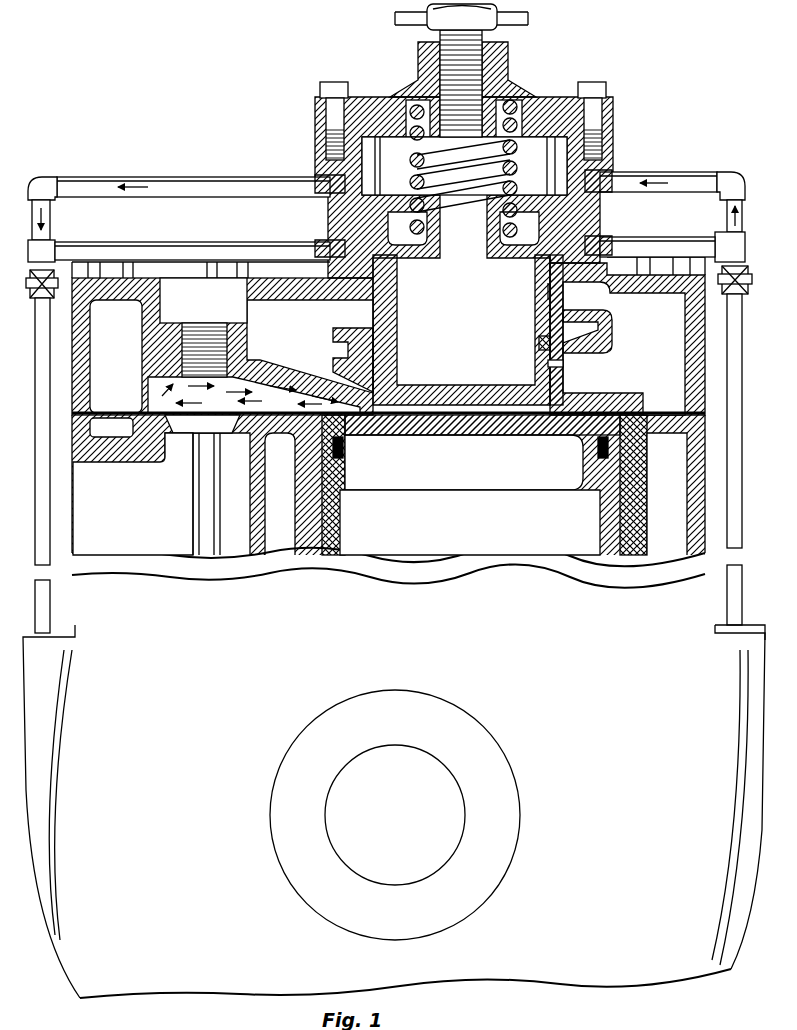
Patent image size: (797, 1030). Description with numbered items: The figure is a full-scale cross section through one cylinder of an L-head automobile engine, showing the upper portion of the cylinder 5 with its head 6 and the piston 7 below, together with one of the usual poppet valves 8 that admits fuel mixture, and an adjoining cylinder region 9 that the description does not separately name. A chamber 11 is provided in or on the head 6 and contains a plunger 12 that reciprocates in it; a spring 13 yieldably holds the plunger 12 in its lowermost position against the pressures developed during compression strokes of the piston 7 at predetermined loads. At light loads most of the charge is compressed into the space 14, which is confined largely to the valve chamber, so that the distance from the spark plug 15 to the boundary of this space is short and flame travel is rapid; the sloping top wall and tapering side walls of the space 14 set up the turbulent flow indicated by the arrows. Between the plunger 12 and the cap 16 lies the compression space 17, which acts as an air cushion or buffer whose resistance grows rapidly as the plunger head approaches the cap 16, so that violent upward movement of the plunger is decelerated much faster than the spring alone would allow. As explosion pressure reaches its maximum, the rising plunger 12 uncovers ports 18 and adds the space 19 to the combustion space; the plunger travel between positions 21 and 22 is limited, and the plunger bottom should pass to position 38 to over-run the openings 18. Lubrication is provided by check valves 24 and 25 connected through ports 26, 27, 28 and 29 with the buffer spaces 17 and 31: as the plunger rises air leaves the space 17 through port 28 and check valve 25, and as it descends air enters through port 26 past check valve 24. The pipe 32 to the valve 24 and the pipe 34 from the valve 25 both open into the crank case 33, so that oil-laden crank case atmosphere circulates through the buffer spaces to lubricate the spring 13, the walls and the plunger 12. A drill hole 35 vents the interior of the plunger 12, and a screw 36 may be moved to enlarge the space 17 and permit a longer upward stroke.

The cylinder 5 is at (305, 554).
The head 6 is at (78, 373).
The piston 7 is at (342, 529).
The poppet valve 8 is at (200, 497).
The chamber 9 is at (83, 500).
The chamber 11 is at (320, 150).
The plunger 12 is at (393, 283).
The spring 13 is at (527, 105).
The space 14 is at (205, 408).
The spark plug 15 is at (203, 327).
The cap 16 is at (346, 97).
The compression space 17 is at (450, 168).
The ports 18 is at (383, 363).
The space 19 is at (586, 334).
The position 21 is at (508, 410).
The position 22 is at (548, 365).
The check valve 24 is at (745, 278).
The check valve 25 is at (34, 278).
The port 26 is at (604, 174).
The port 27 is at (598, 240).
The port 28 is at (318, 181).
The port 29 is at (330, 248).
The buffer space 31 is at (546, 270).
The pipe 32 is at (737, 343).
The crank case 33 is at (753, 630).
The pipe 34 is at (43, 452).
The drill hole 35 is at (539, 288).
The screw 36 is at (522, 20).
The position 38 is at (538, 342).